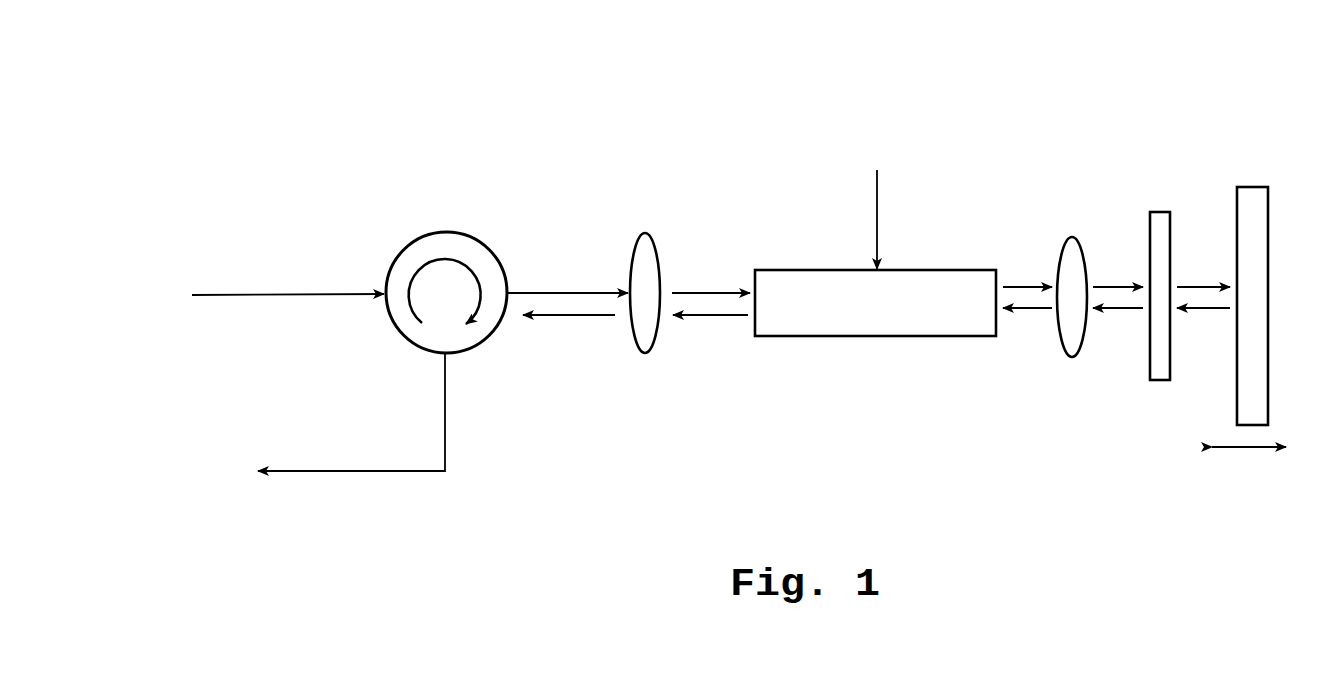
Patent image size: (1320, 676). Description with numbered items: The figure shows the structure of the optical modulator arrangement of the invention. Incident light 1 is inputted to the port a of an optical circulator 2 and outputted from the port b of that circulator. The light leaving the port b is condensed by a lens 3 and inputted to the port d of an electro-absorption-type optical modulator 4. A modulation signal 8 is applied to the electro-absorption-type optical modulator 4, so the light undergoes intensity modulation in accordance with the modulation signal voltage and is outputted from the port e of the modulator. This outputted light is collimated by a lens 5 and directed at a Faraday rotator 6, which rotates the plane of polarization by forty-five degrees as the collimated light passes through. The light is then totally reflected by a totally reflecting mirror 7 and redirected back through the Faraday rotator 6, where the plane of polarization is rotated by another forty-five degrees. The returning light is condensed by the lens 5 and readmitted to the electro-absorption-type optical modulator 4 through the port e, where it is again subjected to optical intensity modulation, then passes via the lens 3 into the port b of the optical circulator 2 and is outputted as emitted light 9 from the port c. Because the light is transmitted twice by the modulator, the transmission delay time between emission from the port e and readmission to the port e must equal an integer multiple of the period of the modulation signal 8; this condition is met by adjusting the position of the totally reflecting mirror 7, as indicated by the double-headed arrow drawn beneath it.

The incident light 1 is at (221, 296).
The optical circulator 2 is at (410, 247).
The lens 3 is at (633, 249).
The electro-absorption-type optical modulator 4 is at (779, 269).
The lens 5 is at (1057, 254).
The Faraday rotator 6 is at (1163, 212).
The totally reflecting mirror 7 is at (1253, 187).
The modulation signal 8 is at (901, 199).
The emitted light 9 is at (338, 412).
The port a is at (384, 302).
The port b is at (507, 291).
The port c is at (447, 355).
The port d is at (753, 318).
The port e is at (997, 328).